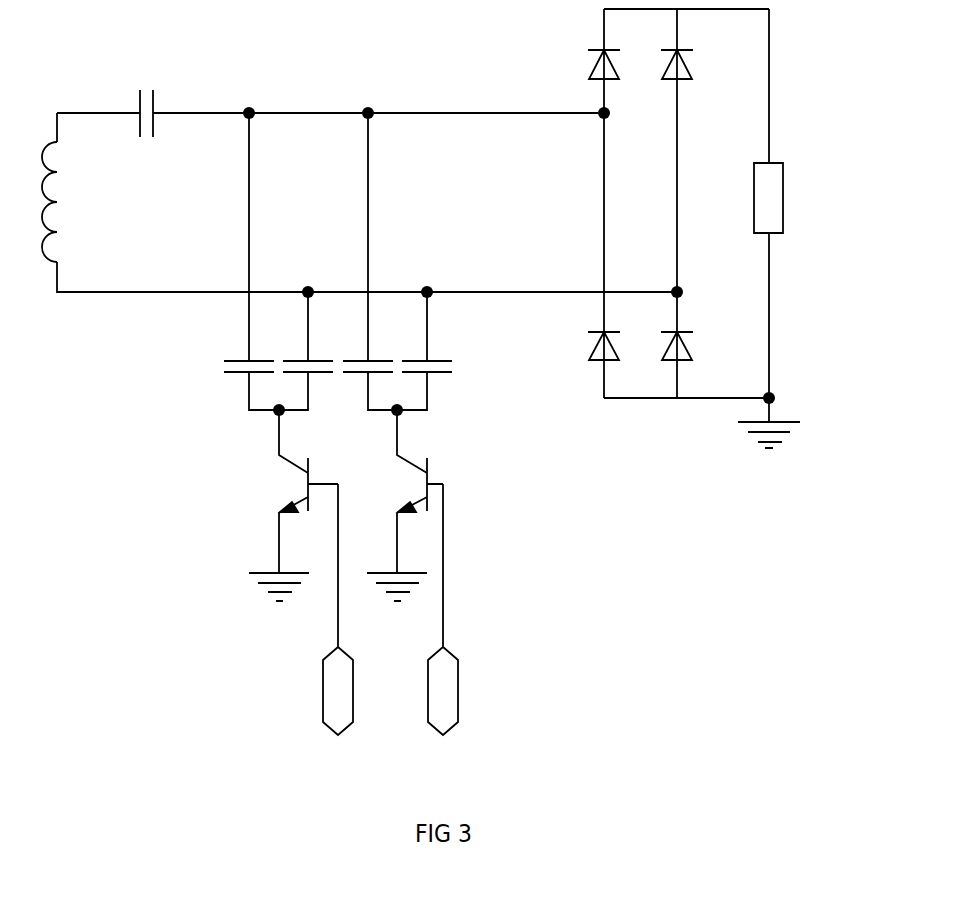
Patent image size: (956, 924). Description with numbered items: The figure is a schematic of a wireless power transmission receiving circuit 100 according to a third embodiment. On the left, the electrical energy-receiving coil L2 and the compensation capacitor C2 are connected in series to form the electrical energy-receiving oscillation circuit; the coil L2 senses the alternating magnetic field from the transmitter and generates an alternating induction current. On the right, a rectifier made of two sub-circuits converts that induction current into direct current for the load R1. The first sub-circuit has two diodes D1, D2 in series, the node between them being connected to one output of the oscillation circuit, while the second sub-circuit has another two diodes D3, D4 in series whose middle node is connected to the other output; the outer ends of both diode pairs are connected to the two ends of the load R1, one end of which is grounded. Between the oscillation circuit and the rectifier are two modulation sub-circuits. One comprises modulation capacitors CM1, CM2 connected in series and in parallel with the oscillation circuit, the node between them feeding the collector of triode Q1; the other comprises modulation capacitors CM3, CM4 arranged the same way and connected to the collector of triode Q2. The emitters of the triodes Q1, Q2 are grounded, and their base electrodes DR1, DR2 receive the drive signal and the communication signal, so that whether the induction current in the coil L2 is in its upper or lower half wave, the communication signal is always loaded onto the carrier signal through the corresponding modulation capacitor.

The wireless power transmission receiving circuit 100 is at (323, 20).
The compensation capacitor C2 is at (144, 129).
The electrical energy-receiving coil L2 is at (67, 202).
The modulation capacitor CM1 is at (233, 261).
The modulation capacitor CM2 is at (298, 351).
The modulation capacitor CM3 is at (379, 261).
The modulation capacitor CM4 is at (436, 351).
The triode Q1 is at (290, 505).
The triode Q2 is at (405, 505).
The base electrode DR1 is at (314, 609).
The base electrode DR2 is at (418, 609).
The diode D1 is at (587, 61).
The diode D2 is at (588, 255).
The diode D3 is at (693, 150).
The diode D4 is at (697, 345).
The load R1 is at (791, 215).